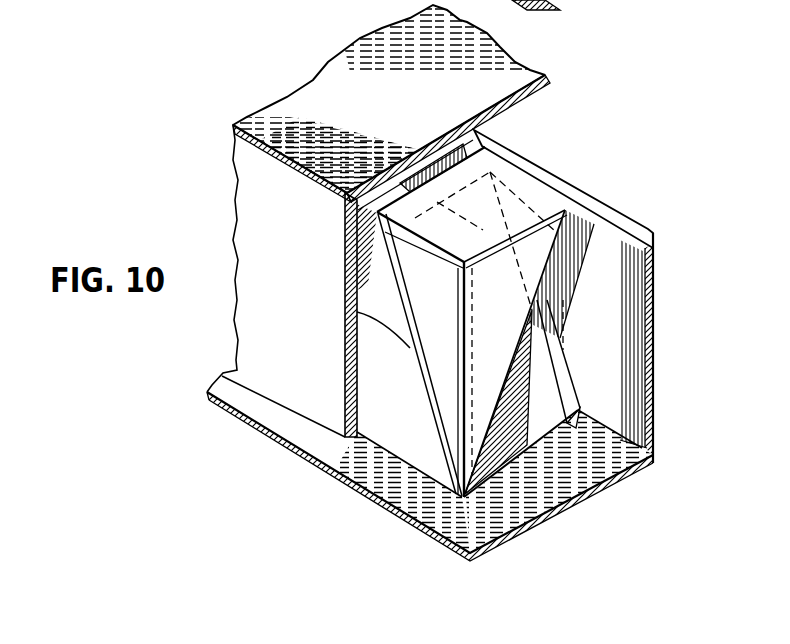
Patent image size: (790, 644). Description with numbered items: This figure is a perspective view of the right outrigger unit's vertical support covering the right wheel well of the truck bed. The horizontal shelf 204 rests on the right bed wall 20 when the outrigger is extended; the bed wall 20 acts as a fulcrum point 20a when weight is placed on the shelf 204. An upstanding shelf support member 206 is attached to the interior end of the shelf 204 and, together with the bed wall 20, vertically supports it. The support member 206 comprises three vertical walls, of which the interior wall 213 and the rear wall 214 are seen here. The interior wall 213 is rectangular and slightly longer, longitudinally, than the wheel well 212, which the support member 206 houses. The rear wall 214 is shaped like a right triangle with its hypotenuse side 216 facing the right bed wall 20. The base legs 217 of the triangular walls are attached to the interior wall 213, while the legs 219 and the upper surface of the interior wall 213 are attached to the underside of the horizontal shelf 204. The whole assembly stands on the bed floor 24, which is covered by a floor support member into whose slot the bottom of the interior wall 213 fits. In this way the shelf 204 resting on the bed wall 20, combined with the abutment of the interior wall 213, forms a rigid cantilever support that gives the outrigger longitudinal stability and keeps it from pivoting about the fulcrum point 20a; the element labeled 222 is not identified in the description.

The horizontal shelf 204 is at (497, 70).
The upstanding shelf support member 206 is at (262, 208).
The interior wall 213 is at (253, 305).
The wheel well 212 is at (383, 355).
The bed floor 24 is at (367, 492).
The right bed wall 20 is at (657, 310).
The fulcrum point 20a is at (623, 222).
The rear wall 214 is at (517, 298).
The base legs 217 is at (462, 402).
The legs 219 is at (537, 218).
The hypotenuse side 216 is at (517, 365).
The gusset plate 222 is at (522, 423).